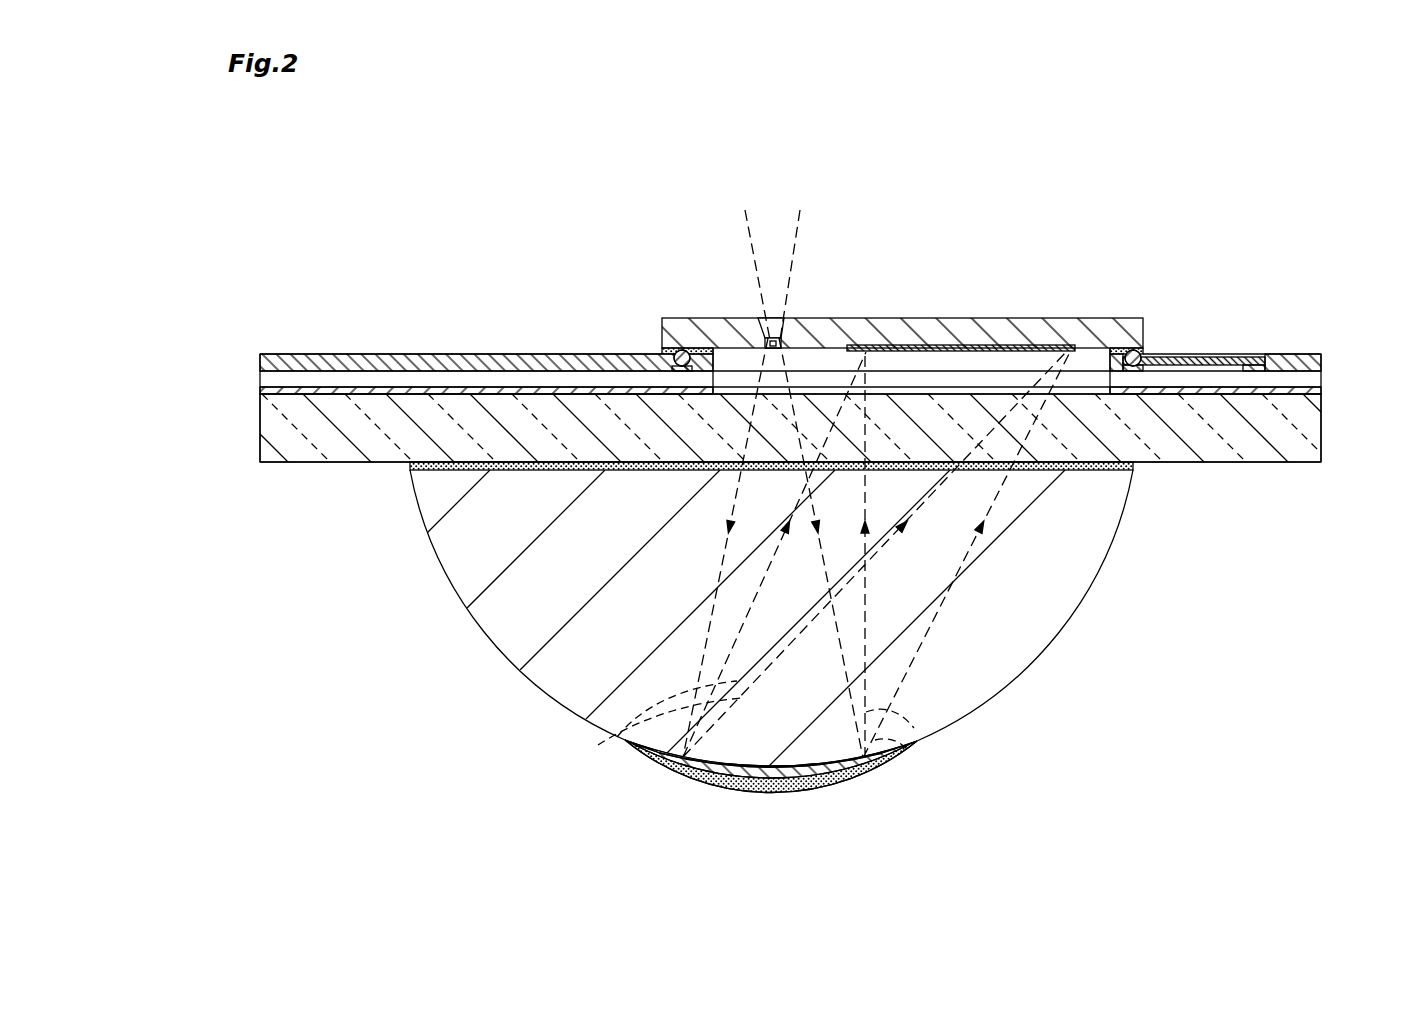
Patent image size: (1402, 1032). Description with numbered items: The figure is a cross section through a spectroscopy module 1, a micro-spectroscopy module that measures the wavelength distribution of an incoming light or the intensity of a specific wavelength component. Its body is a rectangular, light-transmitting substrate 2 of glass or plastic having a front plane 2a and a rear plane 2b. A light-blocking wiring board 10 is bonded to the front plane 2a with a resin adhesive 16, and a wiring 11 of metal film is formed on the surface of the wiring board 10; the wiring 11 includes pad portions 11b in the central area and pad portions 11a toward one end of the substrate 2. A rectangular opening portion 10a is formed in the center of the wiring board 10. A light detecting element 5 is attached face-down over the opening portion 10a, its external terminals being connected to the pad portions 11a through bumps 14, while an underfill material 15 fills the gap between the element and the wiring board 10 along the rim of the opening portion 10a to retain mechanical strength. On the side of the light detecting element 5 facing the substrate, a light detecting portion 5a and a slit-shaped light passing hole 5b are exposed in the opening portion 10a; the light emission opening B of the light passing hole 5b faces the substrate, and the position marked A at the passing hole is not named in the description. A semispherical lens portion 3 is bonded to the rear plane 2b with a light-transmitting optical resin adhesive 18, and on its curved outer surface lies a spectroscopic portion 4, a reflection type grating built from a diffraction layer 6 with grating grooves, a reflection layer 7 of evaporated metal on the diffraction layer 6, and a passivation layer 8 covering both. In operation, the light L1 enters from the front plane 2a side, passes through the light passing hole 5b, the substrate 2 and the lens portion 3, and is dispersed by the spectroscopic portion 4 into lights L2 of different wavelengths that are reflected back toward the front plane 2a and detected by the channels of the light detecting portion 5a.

The spectroscopy module 1 is at (1287, 205).
The substrate 2 is at (1308, 430).
The front plane 2a is at (527, 393).
The rear plane 2b is at (1285, 466).
The lens portion 3 is at (465, 567).
The spectroscopic portion 4 is at (655, 866).
The light detecting element 5 is at (892, 310).
The light detecting portion 5a is at (960, 346).
The light passing hole 5b is at (790, 310).
The diffraction layer 6 is at (800, 772).
The reflection layer 7 is at (748, 780).
The passivation layer 8 is at (663, 770).
The wiring board 10 is at (1307, 380).
The opening portion 10a is at (1106, 382).
The wiring 11 is at (1231, 350).
The pad portions 11a is at (1257, 359).
The pad portions 11b is at (660, 355).
The bumps 14 is at (665, 349).
The underfill material 15 is at (690, 352).
The resin adhesive 16 is at (1308, 396).
The optical resin adhesive 18 is at (1132, 471).
The incident point A is at (767, 316).
The light emission opening B is at (770, 350).
The light L1 is at (800, 210).
The lights L2 is at (627, 738).